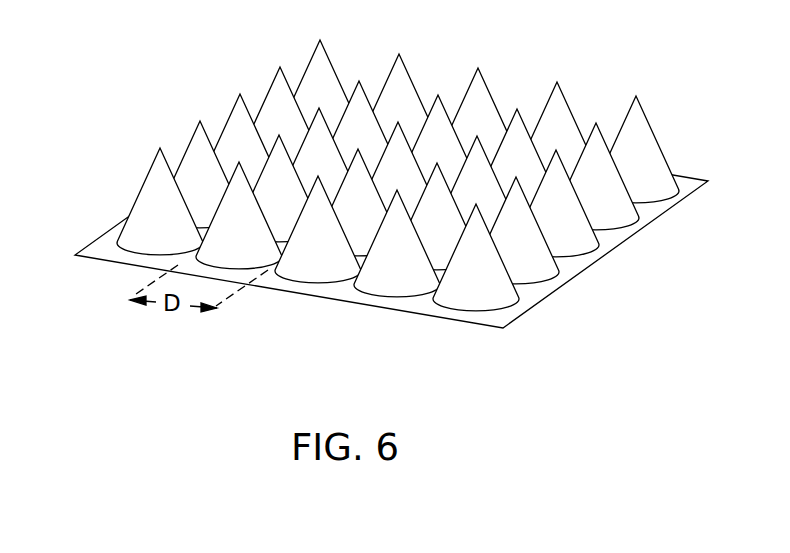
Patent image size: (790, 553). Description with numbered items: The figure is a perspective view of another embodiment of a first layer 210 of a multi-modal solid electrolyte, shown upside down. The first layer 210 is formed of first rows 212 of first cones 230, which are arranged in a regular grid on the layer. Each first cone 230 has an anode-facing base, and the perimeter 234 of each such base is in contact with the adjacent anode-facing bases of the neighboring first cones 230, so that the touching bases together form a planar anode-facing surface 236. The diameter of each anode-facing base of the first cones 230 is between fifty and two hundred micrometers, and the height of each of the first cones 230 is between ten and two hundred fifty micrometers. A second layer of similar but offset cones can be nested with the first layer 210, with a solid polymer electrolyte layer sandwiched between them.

The first layer 210 is at (371, 180).
The first rows 212 is at (145, 240).
The first cones 230 is at (486, 290).
The perimeter 234 is at (275, 272).
The planar anode-facing surface 236 is at (425, 302).